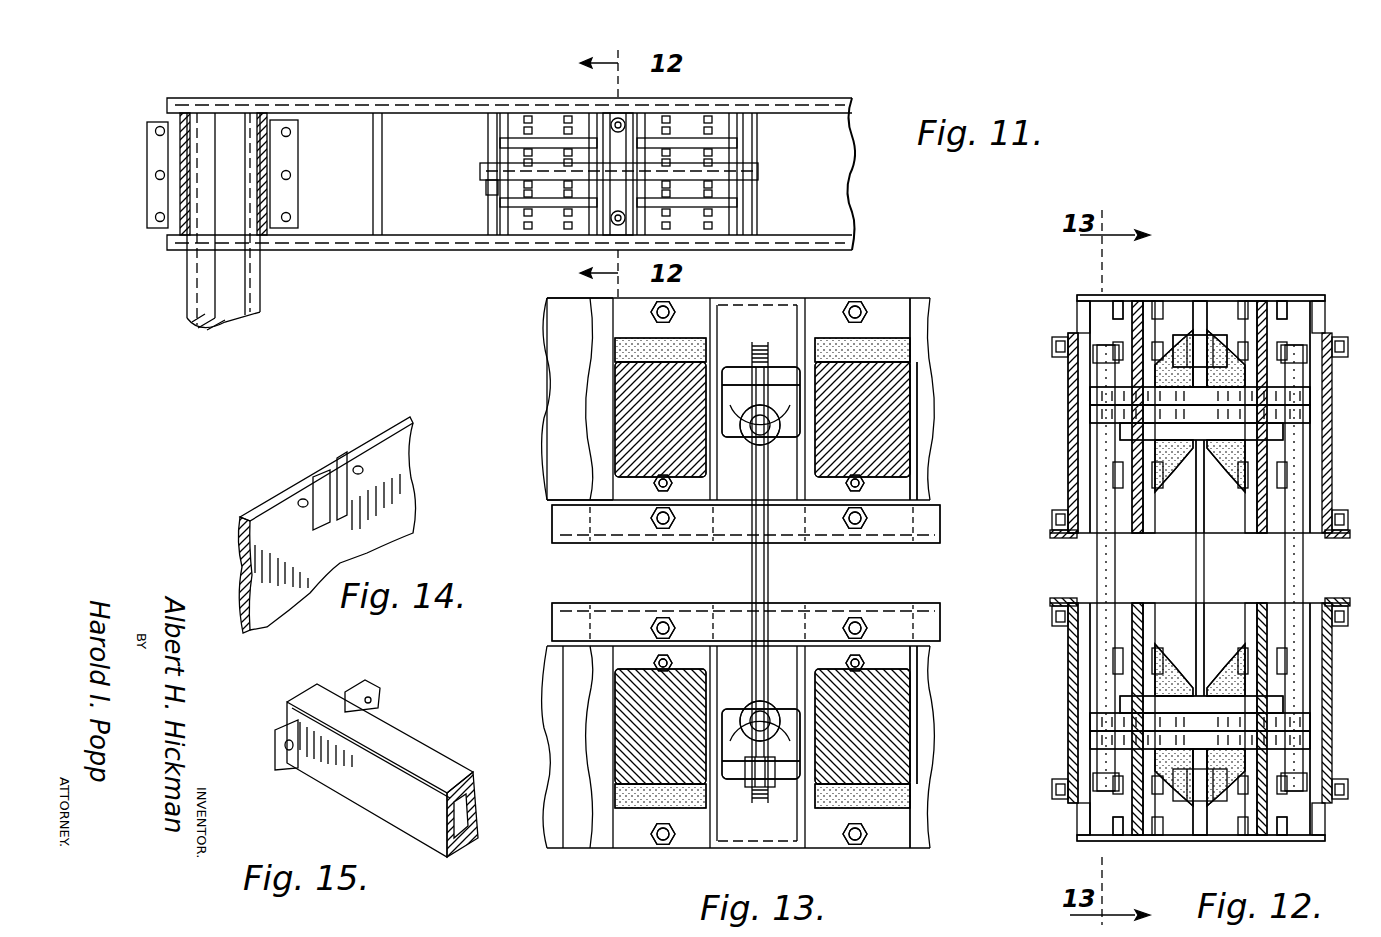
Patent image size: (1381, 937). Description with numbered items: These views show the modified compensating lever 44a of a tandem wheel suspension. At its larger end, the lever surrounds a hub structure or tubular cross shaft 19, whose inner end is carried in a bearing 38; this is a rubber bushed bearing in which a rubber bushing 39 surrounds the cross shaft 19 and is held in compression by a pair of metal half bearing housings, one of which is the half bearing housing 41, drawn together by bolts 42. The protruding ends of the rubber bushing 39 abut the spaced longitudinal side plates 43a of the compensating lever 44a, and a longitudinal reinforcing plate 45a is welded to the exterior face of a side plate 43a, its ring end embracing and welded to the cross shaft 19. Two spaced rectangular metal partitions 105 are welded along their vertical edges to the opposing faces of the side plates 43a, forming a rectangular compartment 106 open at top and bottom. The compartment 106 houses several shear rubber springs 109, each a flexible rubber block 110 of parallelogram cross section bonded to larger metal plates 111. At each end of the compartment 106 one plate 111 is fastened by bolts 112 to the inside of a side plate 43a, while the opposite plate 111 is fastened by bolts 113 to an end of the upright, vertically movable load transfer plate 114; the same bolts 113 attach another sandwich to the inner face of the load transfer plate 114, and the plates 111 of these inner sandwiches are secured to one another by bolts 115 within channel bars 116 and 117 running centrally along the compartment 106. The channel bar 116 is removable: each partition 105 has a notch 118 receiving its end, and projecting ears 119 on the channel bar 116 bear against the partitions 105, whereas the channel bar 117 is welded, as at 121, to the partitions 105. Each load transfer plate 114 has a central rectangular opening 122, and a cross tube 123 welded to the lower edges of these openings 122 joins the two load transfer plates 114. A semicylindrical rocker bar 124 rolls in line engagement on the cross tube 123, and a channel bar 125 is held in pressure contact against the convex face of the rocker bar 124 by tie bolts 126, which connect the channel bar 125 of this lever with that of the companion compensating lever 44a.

In FIG. 11, the tubular cross shaft 19 is at (190, 305).
In FIG. 11, the bearing 38 is at (146, 236).
In FIG. 11, the rubber bushing 39 is at (258, 149).
In FIG. 11, the half bearing housing 41 is at (150, 148).
In FIG. 11, the bolts 42 is at (157, 129).
In FIG. 11, the side plates 43a is at (828, 100).
In FIG. 12, the side plates 43a is at (1072, 473).
In FIG. 11, the compensating lever 44a is at (886, 186).
In FIG. 13, the compensating lever 44a is at (946, 294).
In FIG. 12, the compensating lever 44a is at (1043, 347).
In FIG. 11, the longitudinal reinforcing plate 45a is at (364, 100).
In FIG. 11, the partition 105 is at (490, 137).
In FIG. 12, the partition 105 is at (1315, 303).
In FIG. 14, the partition 105 is at (272, 504).
In FIG. 11, the compartment 106 is at (490, 127).
In FIG. 13, the compartment 106 is at (927, 443).
In FIG. 11, the shear rubber spring 109 is at (545, 128).
In FIG. 13, the shear rubber spring 109 is at (625, 408).
In FIG. 12, the shear rubber spring 109 is at (1150, 293).
In FIG. 11, the rubber block 110 is at (510, 115).
In FIG. 13, the rubber block 110 is at (630, 380).
In FIG. 12, the rubber block 110 is at (1150, 363).
In FIG. 11, the metal plate 111 is at (508, 100).
In FIG. 13, the metal plate 111 is at (622, 299).
In FIG. 12, the metal plate 111 is at (1082, 333).
In FIG. 11, the bolts 112 is at (717, 115).
In FIG. 13, the bolts 112 is at (545, 320).
In FIG. 12, the bolts 112 is at (1065, 355).
In FIG. 11, the bolts 113 is at (713, 120).
In FIG. 13, the bolts 113 is at (653, 487).
In FIG. 12, the bolts 113 is at (1090, 300).
In FIG. 11, the load transfer plate 114 is at (576, 138).
In FIG. 13, the load transfer plate 114 is at (772, 306).
In FIG. 12, the load transfer plate 114 is at (1137, 297).
In FIG. 11, the bolts 115 is at (748, 183).
In FIG. 13, the bolts 115 is at (677, 532).
In FIG. 12, the bolts 115 is at (1205, 300).
In FIG. 11, the channel bar 116 is at (758, 170).
In FIG. 13, the channel bar 116 is at (550, 347).
In FIG. 12, the channel bar 116 is at (1212, 305).
In FIG. 15, the channel bar 116 is at (432, 752).
In FIG. 13, the channel bar 117 is at (560, 518).
In FIG. 12, the channel bar 117 is at (1197, 535).
In FIG. 14, the notch 118 is at (345, 502).
In FIG. 11, the ears 119 is at (492, 190).
In FIG. 15, the ears 119 is at (360, 692).
In FIG. 12, the weld 121 is at (1227, 540).
In FIG. 13, the rectangular opening 122 is at (793, 367).
In FIG. 12, the rectangular opening 122 is at (1197, 333).
In FIG. 13, the cross tube 123 is at (787, 440).
In FIG. 12, the cross tube 123 is at (1287, 432).
In FIG. 11, the rocker bar 124 is at (493, 157).
In FIG. 13, the rocker bar 124 is at (733, 440).
In FIG. 12, the rocker bar 124 is at (1100, 415).
In FIG. 11, the channel bar 125 is at (627, 157).
In FIG. 13, the channel bar 125 is at (735, 367).
In FIG. 12, the channel bar 125 is at (1100, 397).
In FIG. 11, the tie bolts 126 is at (621, 112).
In FIG. 13, the tie bolts 126 is at (765, 556).
In FIG. 12, the tie bolts 126 is at (1097, 572).